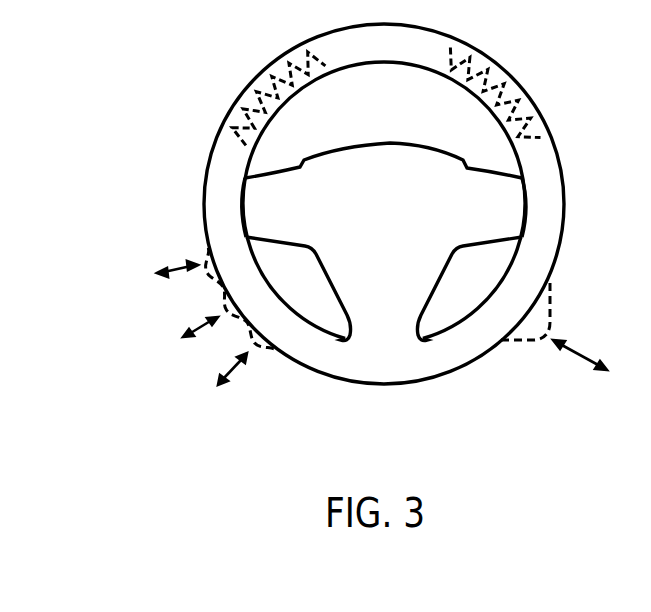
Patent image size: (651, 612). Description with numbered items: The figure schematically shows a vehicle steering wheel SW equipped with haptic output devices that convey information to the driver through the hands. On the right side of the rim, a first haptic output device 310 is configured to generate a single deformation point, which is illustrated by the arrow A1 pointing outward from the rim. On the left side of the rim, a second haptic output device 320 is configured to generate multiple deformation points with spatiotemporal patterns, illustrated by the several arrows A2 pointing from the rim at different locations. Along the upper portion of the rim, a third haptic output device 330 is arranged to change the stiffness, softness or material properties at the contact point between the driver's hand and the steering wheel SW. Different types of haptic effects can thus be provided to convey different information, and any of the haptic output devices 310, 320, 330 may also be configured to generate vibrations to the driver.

The steering wheel SW is at (405, 222).
The third haptic output device 330 is at (257, 102).
The second haptic output device 320 is at (205, 260).
The first haptic output device 310 is at (557, 302).
The arrow A1 is at (580, 353).
The arrows A2 is at (176, 270).